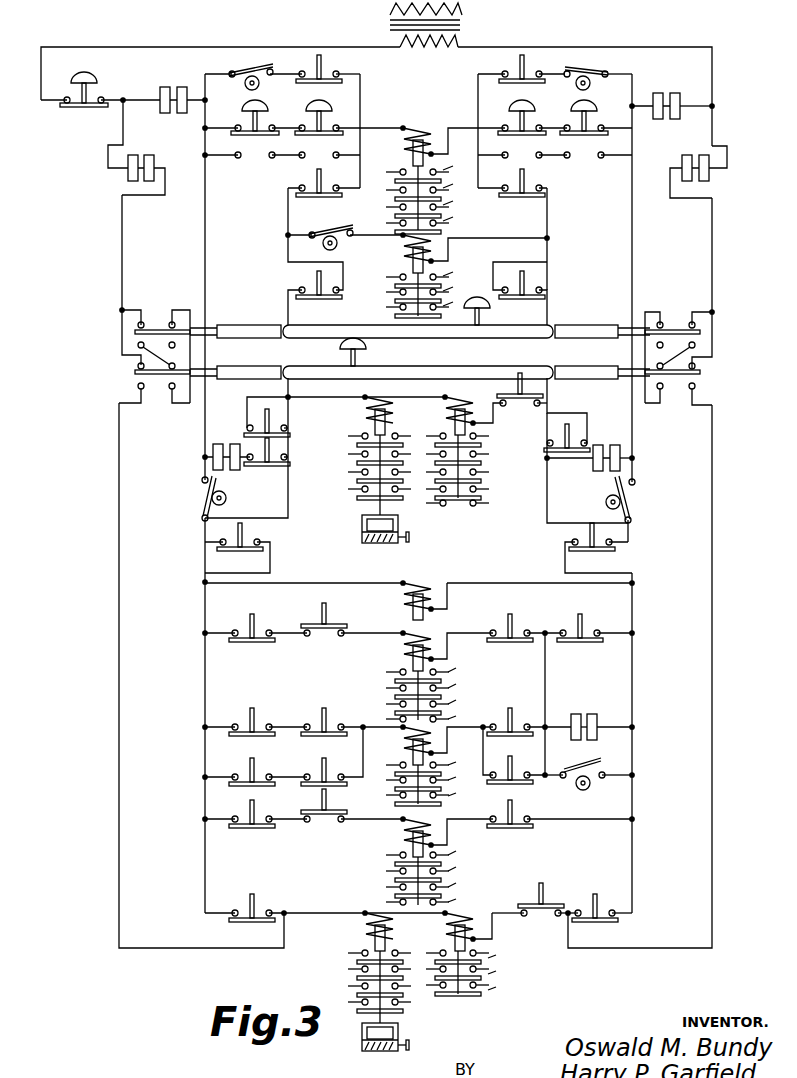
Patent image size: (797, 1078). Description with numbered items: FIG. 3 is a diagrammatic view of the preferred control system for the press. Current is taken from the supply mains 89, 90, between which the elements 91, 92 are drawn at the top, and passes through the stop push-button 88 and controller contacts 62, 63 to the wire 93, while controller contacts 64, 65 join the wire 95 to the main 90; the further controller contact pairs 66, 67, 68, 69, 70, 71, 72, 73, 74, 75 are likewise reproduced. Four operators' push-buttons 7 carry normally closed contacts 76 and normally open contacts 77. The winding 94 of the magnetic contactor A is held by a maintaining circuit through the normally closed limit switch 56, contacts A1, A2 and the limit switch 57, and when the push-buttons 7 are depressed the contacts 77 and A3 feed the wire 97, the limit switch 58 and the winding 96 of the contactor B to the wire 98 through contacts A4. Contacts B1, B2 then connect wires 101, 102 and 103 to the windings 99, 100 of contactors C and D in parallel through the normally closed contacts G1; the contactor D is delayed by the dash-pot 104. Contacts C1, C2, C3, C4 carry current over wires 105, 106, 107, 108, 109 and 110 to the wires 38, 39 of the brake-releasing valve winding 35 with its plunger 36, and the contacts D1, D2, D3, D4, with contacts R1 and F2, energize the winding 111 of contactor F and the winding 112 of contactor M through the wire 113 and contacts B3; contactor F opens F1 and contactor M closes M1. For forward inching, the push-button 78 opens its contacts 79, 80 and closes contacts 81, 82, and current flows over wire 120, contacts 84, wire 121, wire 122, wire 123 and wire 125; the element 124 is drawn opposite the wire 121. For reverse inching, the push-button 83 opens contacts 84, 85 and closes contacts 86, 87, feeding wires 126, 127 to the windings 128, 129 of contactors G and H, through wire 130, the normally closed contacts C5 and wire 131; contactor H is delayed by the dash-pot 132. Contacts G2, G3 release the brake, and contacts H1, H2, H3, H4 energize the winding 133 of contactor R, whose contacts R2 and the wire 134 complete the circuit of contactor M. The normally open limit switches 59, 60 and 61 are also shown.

The transformer primary winding 92 is at (452, 6).
The transformer secondary winding 91 is at (456, 44).
The supply main 89 is at (66, 46).
The supply main 90 is at (712, 47).
The stop push-button 88 is at (88, 100).
The controller contact 62 is at (161, 109).
The controller contact 63 is at (187, 109).
The controller contact 64 is at (651, 112).
The controller contact 65 is at (690, 112).
The controller contact 72 is at (123, 140).
The controller contact 73 is at (143, 166).
The controller contact 74 is at (691, 168).
The controller contact 75 is at (709, 159).
The wire 93 is at (192, 278).
The wire 95 is at (632, 106).
The limit switch 56 is at (248, 70).
The limit switch 57 is at (583, 70).
The push-button 7 is at (300, 118).
The normally closed contacts 76 is at (240, 126).
The normally open contacts 77 is at (418, 163).
The winding 94 is at (422, 131).
The winding 96 is at (428, 257).
The wire 97 is at (288, 225).
The wire 98 is at (547, 225).
The limit switch 58 is at (325, 233).
The wire 101 is at (288, 322).
The wire 103 is at (547, 320).
The wire 120 is at (122, 254).
The wire 125 is at (712, 273).
The wire 122 is at (250, 356).
The wire 123 is at (596, 356).
The inching push-button 78 is at (480, 318).
The inching push-button 83 is at (358, 357).
The normally closed contacts 79 is at (144, 324).
The normally open contacts 81 is at (170, 345).
The wire 121 is at (153, 355).
The normally closed contacts 84 is at (135, 366).
The normally open contacts 86 is at (135, 386).
The normally closed contacts 80 is at (690, 324).
The normally open contacts 82 is at (690, 345).
The movable contact 124 is at (672, 355).
The normally closed contacts 85 is at (695, 367).
The normally open contacts 87 is at (679, 392).
The wire 105 is at (262, 397).
The wire 102 is at (326, 397).
The wire 106 is at (288, 497).
The controller contact 66 is at (216, 449).
The controller contact 67 is at (234, 449).
The controller contact 68 is at (577, 449).
The controller contact 69 is at (621, 449).
The limit switch 59 is at (203, 494).
The limit switch 60 is at (624, 498).
The winding 100 is at (388, 403).
The winding 99 is at (476, 400).
The dash-pot 104 is at (398, 523).
The wire 110 is at (570, 412).
The wire 109 is at (545, 520).
The wire 107 is at (205, 583).
The wire 108 is at (632, 583).
The circuit wire 38 is at (255, 586).
The circuit wire 39 is at (480, 583).
The valve winding 35 is at (420, 586).
The plunger 36 is at (425, 616).
The winding 111 is at (425, 647).
The winding 112 is at (425, 742).
The winding 133 is at (425, 835).
The wire 113 is at (545, 676).
The wire 134 is at (545, 754).
The controller contact 70 is at (576, 720).
The controller contact 71 is at (609, 720).
The limit switch 61 is at (596, 768).
The wire 126 is at (119, 661).
The wire 127 is at (318, 913).
The winding 128 is at (387, 930).
The winding 129 is at (460, 914).
The wire 130 is at (505, 913).
The wire 131 is at (712, 446).
The dash-pot 132 is at (383, 1051).
The magnetic contactor A is at (425, 187).
The magnetic contactor B is at (426, 277).
The magnetic contactor C is at (465, 452).
The magnetic contactor D is at (367, 454).
The magnetic contactor F is at (422, 680).
The magnetic contactor M is at (422, 769).
The magnetic contactor R is at (421, 864).
The magnetic contactor H is at (366, 968).
The magnetic contactor G is at (468, 953).
The contacts A1 is at (328, 67).
The contacts A2 is at (521, 67).
The contacts A3 is at (324, 182).
The contacts A4 is at (512, 182).
The contacts B1 is at (319, 284).
The contacts B2 is at (522, 284).
The contacts B3 is at (594, 628).
The contacts C1 is at (267, 422).
The contacts C2 is at (237, 548).
The contacts C3 is at (598, 548).
The contacts C4 is at (567, 437).
The contacts C5 is at (548, 899).
The contacts D1 is at (256, 628).
The contacts D2 is at (256, 722).
The contacts D3 is at (529, 722).
The contacts D4 is at (525, 628).
The control contacts F1 is at (352, 805).
The control contacts F2 is at (352, 722).
The control contacts M1 is at (265, 452).
The control contacts R1 is at (352, 619).
The control contacts R2 is at (332, 756).
The contacts H1 is at (256, 772).
The contacts H2 is at (256, 814).
The contacts H3 is at (559, 814).
The contacts H4 is at (514, 755).
The contacts G1 is at (522, 397).
The contacts G2 is at (245, 908).
The contacts G3 is at (602, 908).